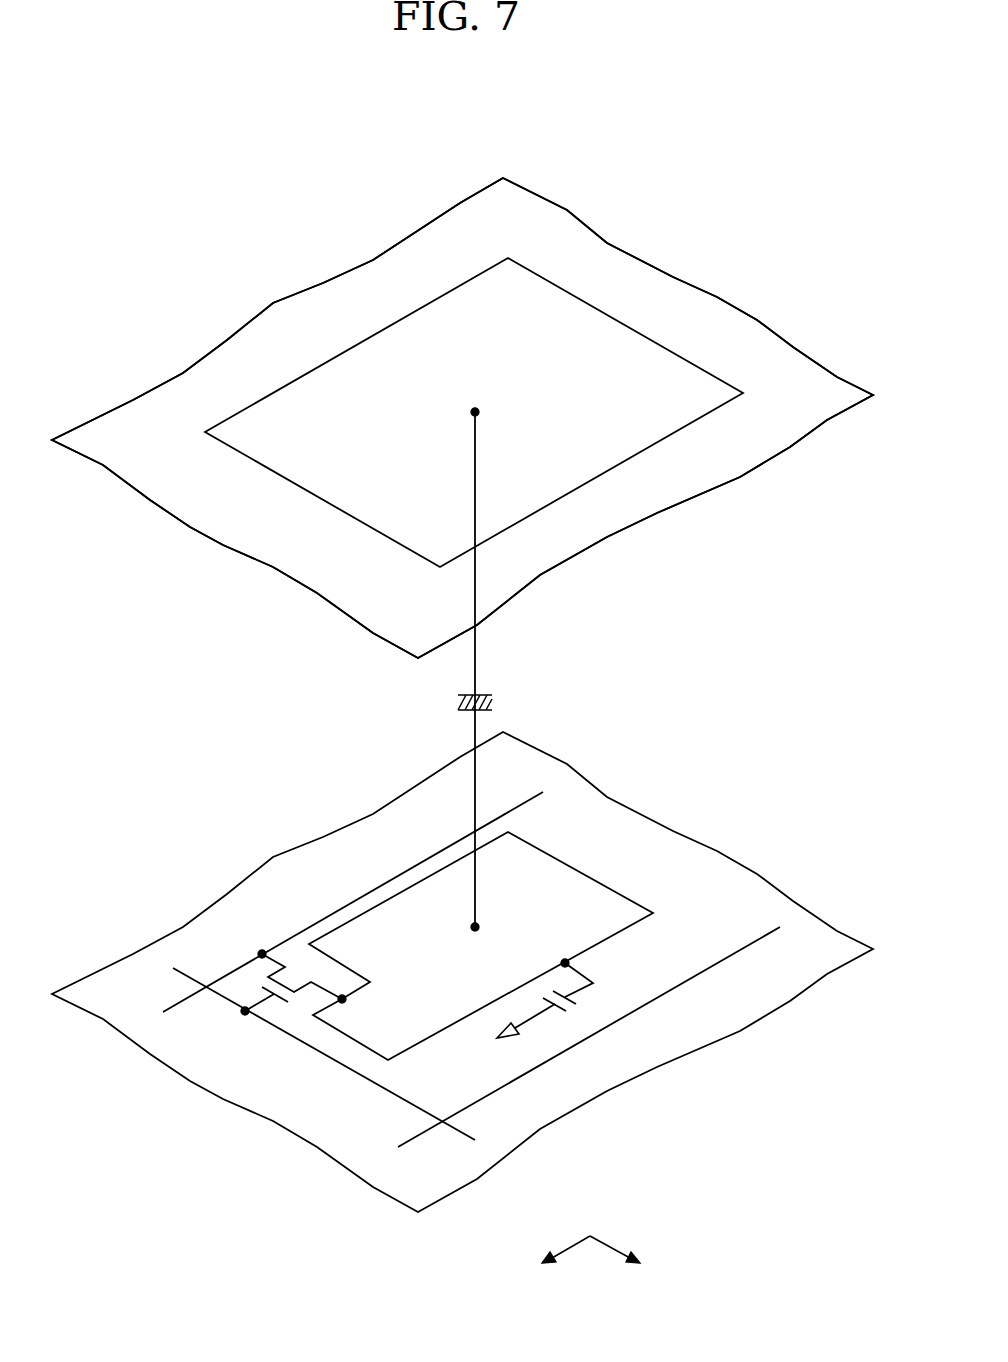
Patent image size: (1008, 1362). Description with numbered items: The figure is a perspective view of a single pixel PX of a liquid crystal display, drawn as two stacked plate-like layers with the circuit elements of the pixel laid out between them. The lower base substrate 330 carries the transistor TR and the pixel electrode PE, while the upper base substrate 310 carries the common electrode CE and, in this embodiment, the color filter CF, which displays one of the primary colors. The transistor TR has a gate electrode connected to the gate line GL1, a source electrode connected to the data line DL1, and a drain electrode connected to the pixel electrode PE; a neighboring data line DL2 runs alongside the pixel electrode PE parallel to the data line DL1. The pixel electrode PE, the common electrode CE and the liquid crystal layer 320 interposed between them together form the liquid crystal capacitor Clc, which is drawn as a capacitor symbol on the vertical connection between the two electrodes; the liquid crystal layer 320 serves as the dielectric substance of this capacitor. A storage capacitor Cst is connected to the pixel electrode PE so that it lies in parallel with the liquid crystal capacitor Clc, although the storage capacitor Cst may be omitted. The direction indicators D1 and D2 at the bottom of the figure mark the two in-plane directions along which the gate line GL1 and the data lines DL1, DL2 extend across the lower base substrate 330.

The pixel PX is at (232, 269).
The common electrode CE is at (745, 462).
The color filter CF is at (595, 482).
The upper base substrate 310 is at (548, 597).
The liquid crystal capacitor Clc is at (498, 667).
The liquid crystal layer 320 is at (639, 686).
The lower base substrate 330 is at (637, 1087).
The pixel electrode PE is at (613, 821).
The gate line GL1 is at (301, 1046).
The data line DL1 is at (330, 910).
The data line DL2 is at (566, 1046).
The transistor TR is at (281, 1008).
The storage capacitor Cst is at (557, 1000).
The first direction D1 is at (629, 1258).
The second direction D2 is at (557, 1267).